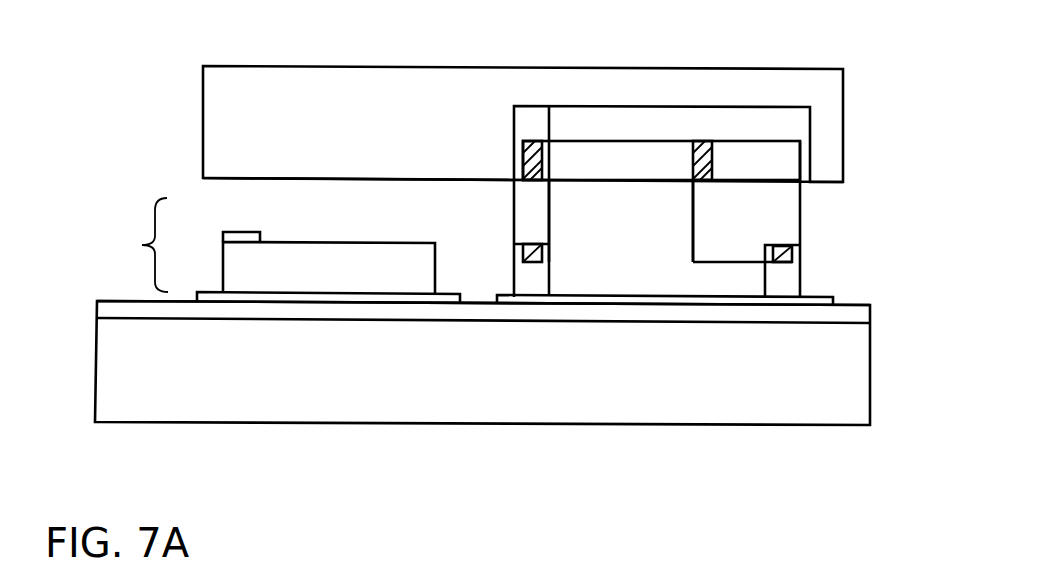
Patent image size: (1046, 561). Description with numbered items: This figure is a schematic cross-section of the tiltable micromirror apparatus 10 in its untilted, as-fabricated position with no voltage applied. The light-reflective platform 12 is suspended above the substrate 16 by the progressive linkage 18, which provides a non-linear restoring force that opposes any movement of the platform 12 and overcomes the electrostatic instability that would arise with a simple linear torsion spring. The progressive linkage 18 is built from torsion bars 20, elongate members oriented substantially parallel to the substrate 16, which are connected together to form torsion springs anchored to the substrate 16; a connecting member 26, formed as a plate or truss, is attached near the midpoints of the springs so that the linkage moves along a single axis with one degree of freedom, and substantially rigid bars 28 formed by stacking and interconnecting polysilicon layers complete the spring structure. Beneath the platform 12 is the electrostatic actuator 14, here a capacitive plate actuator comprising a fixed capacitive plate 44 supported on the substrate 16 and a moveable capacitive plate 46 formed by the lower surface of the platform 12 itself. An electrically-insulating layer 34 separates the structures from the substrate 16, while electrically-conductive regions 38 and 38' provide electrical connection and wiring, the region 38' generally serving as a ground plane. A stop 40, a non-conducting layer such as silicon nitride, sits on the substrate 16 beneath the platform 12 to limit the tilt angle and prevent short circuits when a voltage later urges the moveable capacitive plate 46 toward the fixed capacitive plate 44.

The tiltable micromirror apparatus 10 is at (469, 300).
The light-reflective platform 12 is at (262, 110).
The electrostatic actuator 14 is at (309, 236).
The substrate 16 is at (157, 388).
The progressive linkage 18 is at (833, 233).
The torsion bars 20 is at (693, 158).
The connecting member 26 is at (637, 168).
The substantially rigid bars 28 is at (693, 197).
The electrically-insulating layer 34 is at (96, 308).
The electrically-conductive region 38 is at (336, 325).
The electrically-conductive region 38' is at (667, 328).
The stop 40 is at (262, 232).
The fixed capacitive plate 44 is at (223, 258).
The moveable capacitive plate 46 is at (223, 178).